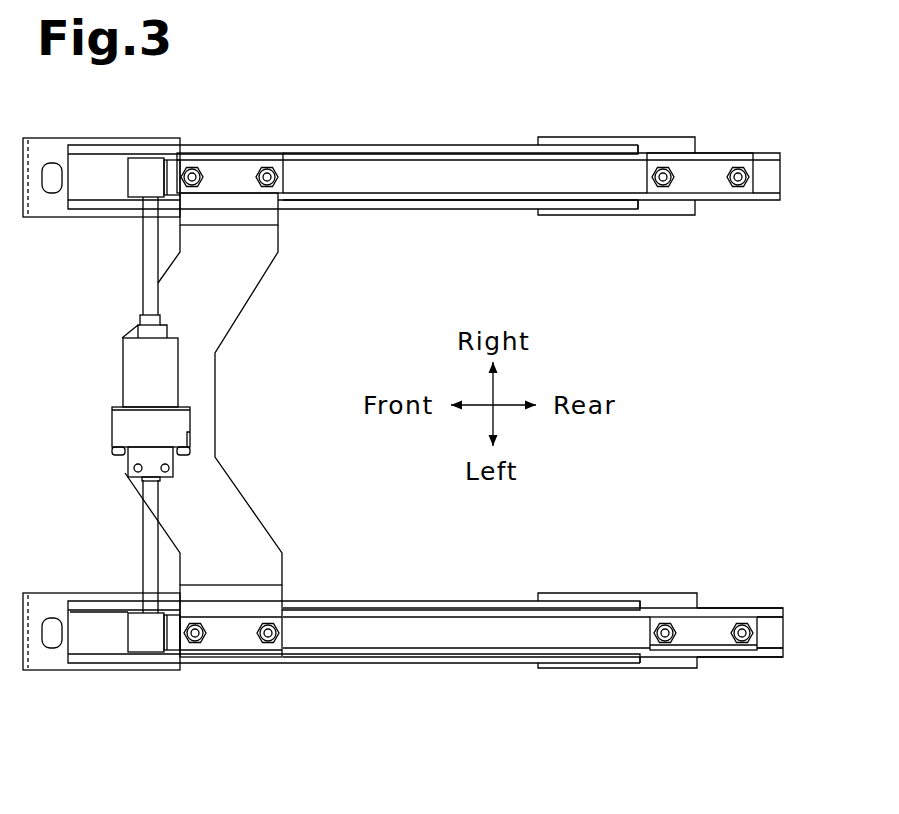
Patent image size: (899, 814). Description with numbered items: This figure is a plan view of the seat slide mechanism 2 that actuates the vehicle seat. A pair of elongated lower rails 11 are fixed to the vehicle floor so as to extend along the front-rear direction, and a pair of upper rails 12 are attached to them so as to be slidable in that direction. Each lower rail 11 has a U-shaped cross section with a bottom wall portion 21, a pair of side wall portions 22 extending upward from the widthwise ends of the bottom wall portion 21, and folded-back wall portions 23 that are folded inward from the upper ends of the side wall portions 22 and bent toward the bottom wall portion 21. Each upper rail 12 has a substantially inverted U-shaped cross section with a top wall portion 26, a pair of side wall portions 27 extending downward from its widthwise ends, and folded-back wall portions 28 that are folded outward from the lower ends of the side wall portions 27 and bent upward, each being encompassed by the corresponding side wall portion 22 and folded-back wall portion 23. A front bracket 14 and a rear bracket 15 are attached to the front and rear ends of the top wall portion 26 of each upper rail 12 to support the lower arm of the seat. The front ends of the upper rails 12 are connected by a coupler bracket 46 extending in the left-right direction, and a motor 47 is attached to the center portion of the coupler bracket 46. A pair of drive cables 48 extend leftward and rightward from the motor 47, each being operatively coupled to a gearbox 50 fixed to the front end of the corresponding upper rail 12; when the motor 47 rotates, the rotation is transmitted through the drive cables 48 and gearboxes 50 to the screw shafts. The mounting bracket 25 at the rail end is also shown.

The seat slide mechanism 2 is at (664, 106).
The lower rail 11 is at (80, 208).
The upper rail 12 is at (760, 200).
The front bracket 14 is at (229, 153).
The rear bracket 15 is at (730, 150).
The bottom wall portion 21 is at (77, 643).
The side wall portion 22 is at (80, 600).
The folded-back wall portion 23 is at (110, 615).
The mounting bracket 25 is at (38, 212).
The top wall portion 26 is at (767, 618).
The side wall portion 27 is at (767, 647).
The folded-back wall portion 28 is at (752, 605).
The coupler bracket 46 is at (210, 437).
The motor 47 is at (128, 356).
The drive cable 48 is at (147, 270).
The gearbox 50 is at (120, 164).